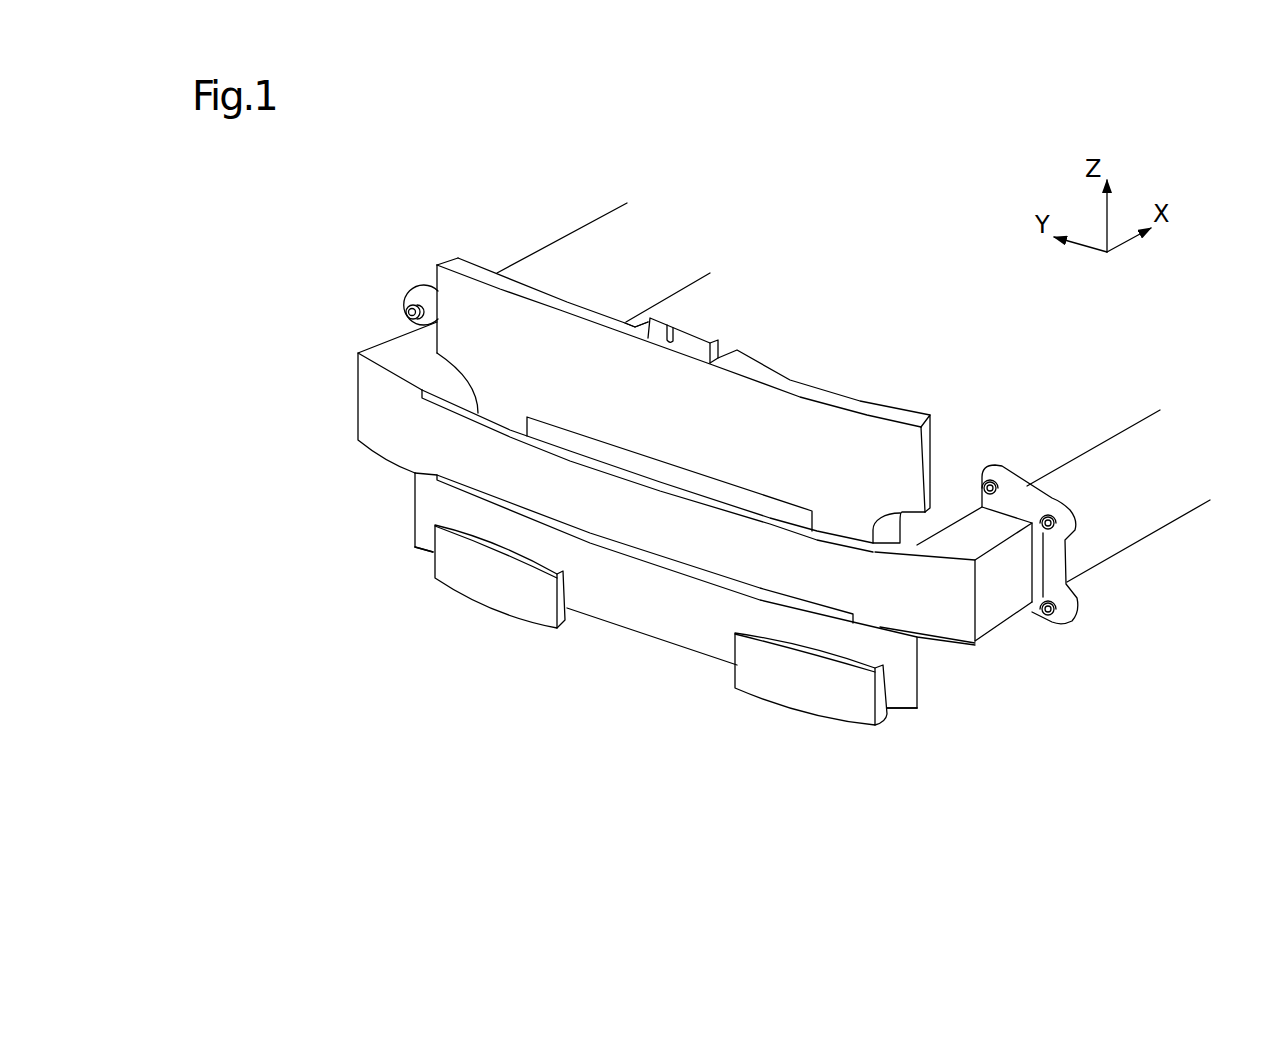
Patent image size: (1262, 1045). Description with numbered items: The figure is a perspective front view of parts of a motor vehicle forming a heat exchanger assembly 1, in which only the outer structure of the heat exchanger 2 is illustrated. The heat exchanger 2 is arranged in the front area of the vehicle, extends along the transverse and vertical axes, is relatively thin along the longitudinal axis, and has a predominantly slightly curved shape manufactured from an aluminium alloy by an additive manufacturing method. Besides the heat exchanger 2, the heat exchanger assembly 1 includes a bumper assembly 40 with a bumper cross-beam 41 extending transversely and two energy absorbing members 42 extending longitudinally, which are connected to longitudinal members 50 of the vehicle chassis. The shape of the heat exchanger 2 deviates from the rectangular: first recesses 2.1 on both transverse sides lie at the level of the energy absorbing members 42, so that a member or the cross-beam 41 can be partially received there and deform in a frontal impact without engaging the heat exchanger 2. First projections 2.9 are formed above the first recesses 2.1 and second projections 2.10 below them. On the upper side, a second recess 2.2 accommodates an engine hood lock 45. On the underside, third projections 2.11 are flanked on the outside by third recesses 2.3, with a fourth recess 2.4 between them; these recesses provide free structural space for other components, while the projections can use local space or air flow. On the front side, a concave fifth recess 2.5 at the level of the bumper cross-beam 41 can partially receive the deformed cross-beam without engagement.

The heat exchanger assembly 1 is at (930, 311).
The heat exchanger 2 is at (838, 398).
The first recess 2.1 is at (440, 391).
The second recess 2.2 is at (633, 326).
The third recess 2.3 is at (419, 573).
The fourth recess 2.4 is at (632, 665).
The fifth recess 2.5 is at (620, 463).
The first projection 2.9 is at (426, 300).
The second projection 2.10 is at (401, 500).
The third projection 2.11 is at (494, 623).
The bumper assembly 40 is at (287, 372).
The bumper cross-beam 41 is at (478, 473).
The energy absorbing member 42 is at (393, 353).
The engine hood lock 45 is at (686, 334).
The longitudinal member 50 is at (565, 242).